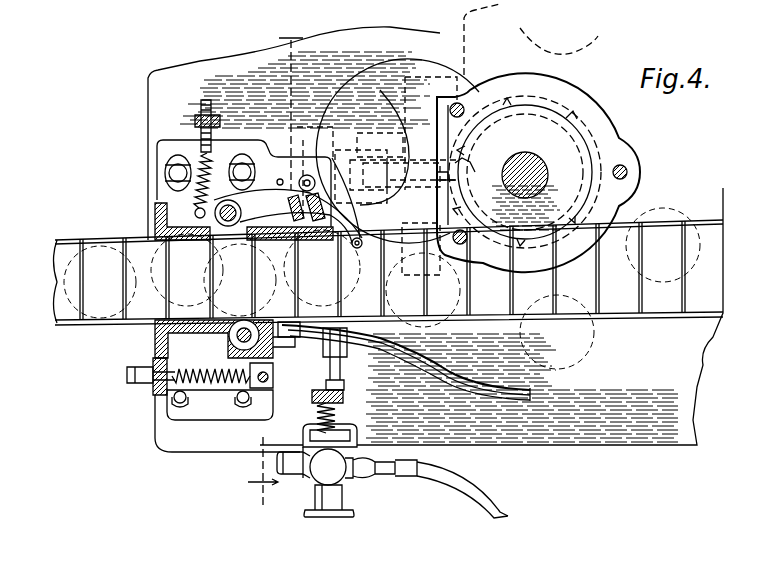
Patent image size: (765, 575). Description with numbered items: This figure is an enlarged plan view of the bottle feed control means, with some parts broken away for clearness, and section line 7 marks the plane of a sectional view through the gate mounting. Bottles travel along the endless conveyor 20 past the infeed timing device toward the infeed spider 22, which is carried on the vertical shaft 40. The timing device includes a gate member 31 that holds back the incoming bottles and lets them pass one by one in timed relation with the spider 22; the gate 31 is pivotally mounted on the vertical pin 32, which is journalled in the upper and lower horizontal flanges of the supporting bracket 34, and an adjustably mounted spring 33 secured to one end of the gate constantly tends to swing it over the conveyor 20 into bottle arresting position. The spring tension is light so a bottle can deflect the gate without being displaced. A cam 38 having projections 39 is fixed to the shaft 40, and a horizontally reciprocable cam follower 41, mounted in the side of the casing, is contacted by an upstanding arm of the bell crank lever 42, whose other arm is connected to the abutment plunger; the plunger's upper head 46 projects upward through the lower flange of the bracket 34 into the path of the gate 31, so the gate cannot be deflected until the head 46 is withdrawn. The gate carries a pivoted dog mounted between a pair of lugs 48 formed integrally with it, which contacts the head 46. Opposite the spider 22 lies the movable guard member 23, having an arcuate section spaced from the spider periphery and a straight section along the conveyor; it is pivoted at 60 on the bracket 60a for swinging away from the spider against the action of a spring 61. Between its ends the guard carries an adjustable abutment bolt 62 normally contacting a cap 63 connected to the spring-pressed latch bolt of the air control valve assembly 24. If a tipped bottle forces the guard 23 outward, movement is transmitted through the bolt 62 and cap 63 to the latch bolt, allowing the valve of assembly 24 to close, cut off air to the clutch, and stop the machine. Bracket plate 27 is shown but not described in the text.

The section line 7- 7 is at (269, 263).
The endless conveyor 20 is at (141, 246).
The infeed spider 22 is at (520, 43).
The movable guard member 23 is at (498, 390).
The air control valve assembly 24 is at (324, 468).
The bracket plate 27 is at (200, 178).
The gate member 31 is at (343, 236).
The pin 32 is at (232, 224).
The adjustably mounted spring 33 is at (212, 162).
The supporting bracket 34 is at (198, 232).
The cam 38 is at (555, 133).
The projections 39 is at (565, 112).
The vertical shaft 40 is at (548, 166).
The cam follower 41 is at (467, 170).
The bell crank lever 42 is at (380, 90).
The head of abutment plunger 46 is at (305, 178).
The lugs 48 is at (289, 222).
The guard pivot 60 is at (249, 274).
The bracket 60a is at (172, 410).
The spring 61 is at (210, 390).
The adjustable abutment bolt 62 is at (344, 383).
The cap 63 is at (316, 394).